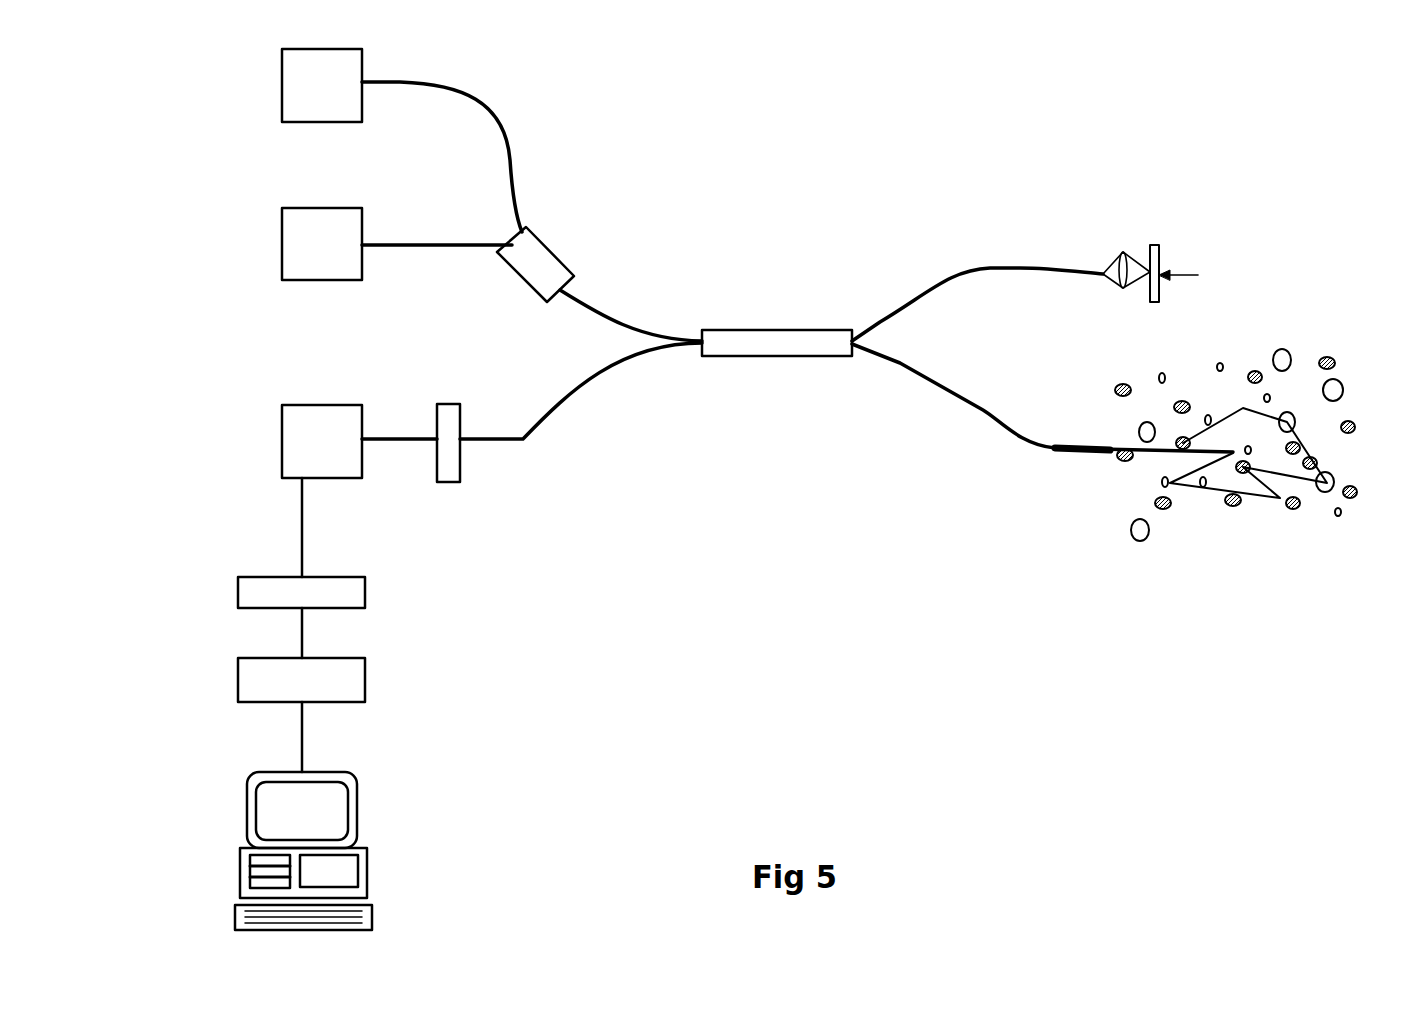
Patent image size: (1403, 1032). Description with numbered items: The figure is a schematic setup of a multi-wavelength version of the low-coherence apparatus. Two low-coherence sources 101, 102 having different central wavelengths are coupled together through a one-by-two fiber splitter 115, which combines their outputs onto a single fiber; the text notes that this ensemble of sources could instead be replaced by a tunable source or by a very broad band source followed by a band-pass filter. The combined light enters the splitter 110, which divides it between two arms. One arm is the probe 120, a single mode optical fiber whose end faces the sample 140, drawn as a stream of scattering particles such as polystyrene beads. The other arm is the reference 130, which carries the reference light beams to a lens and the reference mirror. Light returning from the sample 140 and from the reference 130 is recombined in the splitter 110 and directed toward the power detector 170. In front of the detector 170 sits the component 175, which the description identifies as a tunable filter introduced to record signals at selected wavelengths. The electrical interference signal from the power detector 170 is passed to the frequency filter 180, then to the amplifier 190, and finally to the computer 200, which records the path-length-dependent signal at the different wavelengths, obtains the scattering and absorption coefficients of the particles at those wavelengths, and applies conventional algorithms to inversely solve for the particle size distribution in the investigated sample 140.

The low-coherence source 101 is at (362, 60).
The low-coherence source 102 is at (362, 217).
The 1×2 fiber splitter 115 is at (550, 252).
The splitter 110 is at (776, 330).
The reference 130 is at (950, 283).
The probe 120 is at (990, 418).
The sample 140 is at (1345, 406).
The power detector 170 is at (362, 405).
The optical filter 175 is at (463, 412).
The frequency filter 180 is at (238, 587).
The amplifier 190 is at (238, 680).
The computer 200 is at (247, 805).